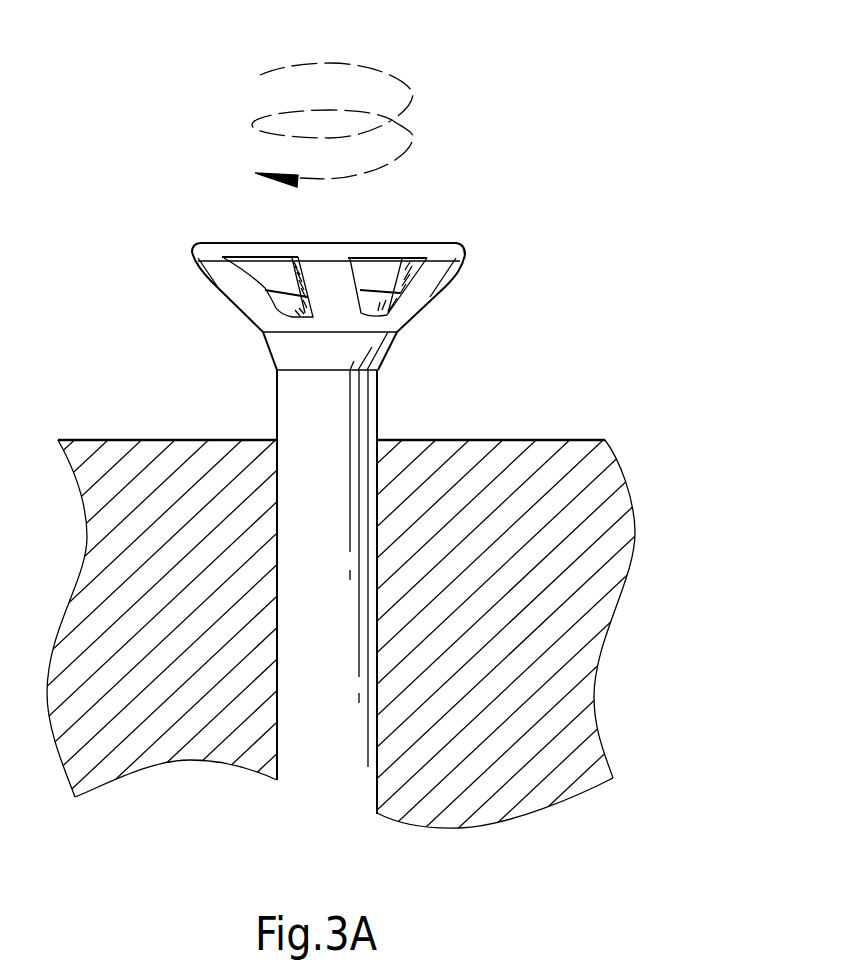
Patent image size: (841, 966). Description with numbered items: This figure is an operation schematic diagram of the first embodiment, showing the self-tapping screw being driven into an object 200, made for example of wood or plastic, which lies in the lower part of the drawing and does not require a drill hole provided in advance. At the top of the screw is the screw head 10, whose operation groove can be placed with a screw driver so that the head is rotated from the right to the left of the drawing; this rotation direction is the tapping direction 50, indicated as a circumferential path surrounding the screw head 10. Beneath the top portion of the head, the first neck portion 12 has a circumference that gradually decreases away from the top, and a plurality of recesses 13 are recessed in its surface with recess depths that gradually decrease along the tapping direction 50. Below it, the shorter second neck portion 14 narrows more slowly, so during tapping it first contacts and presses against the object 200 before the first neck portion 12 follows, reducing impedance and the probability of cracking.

The screw head 10 is at (451, 239).
The first neck portion 12 is at (408, 310).
The recesses 13 is at (255, 253).
The second neck portion 14 is at (386, 353).
The tapping direction 50 is at (340, 41).
The object 200 is at (110, 438).